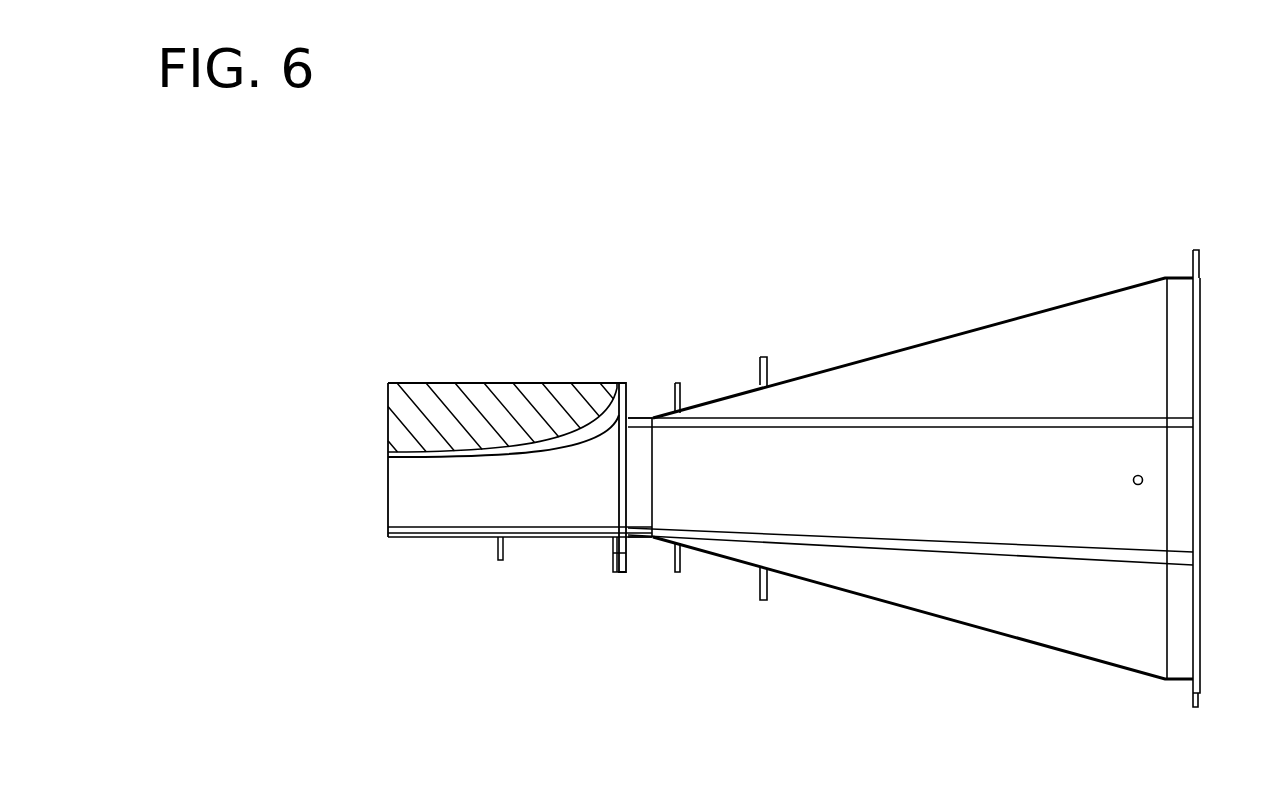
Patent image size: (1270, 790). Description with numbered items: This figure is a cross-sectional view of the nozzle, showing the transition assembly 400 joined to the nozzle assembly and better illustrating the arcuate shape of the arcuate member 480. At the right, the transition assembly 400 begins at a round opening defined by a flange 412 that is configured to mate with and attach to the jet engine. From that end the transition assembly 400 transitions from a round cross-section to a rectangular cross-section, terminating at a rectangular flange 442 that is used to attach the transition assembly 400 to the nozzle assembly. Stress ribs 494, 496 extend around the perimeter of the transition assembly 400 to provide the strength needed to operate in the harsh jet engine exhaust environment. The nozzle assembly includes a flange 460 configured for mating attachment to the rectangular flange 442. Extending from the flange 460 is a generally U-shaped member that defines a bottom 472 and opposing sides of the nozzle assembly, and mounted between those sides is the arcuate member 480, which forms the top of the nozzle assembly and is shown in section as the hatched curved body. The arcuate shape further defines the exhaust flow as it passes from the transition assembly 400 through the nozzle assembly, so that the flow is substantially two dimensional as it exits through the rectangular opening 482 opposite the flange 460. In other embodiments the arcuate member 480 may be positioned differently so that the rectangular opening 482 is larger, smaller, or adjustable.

The transition assembly 400 is at (1028, 313).
The flange 412 is at (1195, 260).
The rectangular flange 442 is at (632, 388).
The flange 460 is at (618, 396).
The bottom 472 is at (418, 538).
The arcuate member 480 is at (415, 453).
The rectangular opening 482 is at (388, 499).
The stress rib 494 is at (765, 357).
The stress rib 496 is at (677, 385).